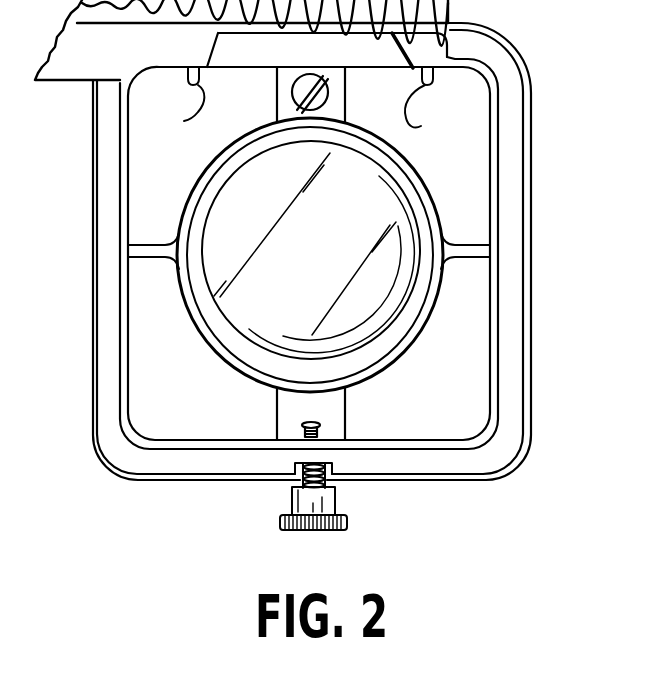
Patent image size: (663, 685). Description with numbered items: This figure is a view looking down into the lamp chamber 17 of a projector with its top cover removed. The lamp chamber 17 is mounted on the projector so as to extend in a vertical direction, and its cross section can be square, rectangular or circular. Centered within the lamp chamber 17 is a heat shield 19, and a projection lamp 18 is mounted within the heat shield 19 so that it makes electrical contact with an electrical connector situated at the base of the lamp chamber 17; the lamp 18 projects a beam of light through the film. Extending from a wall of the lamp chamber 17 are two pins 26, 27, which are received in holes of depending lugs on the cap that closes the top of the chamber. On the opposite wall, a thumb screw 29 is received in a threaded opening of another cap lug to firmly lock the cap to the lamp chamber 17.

The lamp chamber 17 is at (494, 203).
The projection lamp 18 is at (340, 309).
The heat shield 19 is at (182, 291).
The pin 26 is at (184, 121).
The pin 27 is at (421, 126).
The thumb screw 29 is at (293, 532).